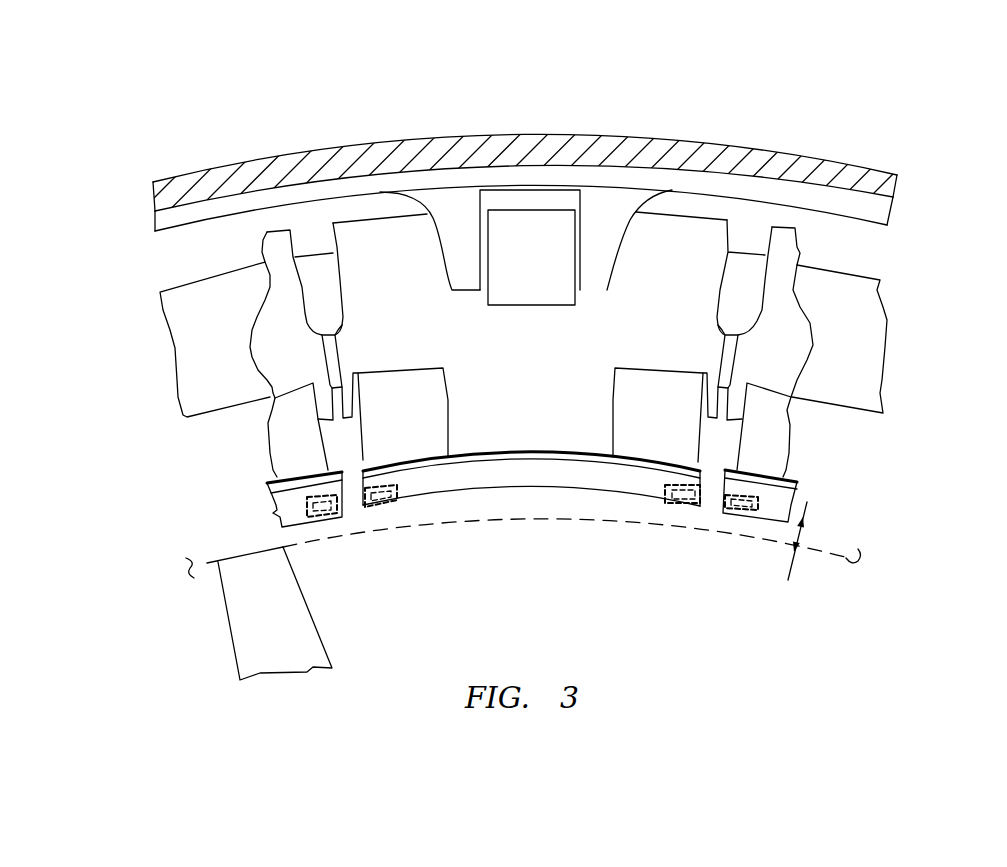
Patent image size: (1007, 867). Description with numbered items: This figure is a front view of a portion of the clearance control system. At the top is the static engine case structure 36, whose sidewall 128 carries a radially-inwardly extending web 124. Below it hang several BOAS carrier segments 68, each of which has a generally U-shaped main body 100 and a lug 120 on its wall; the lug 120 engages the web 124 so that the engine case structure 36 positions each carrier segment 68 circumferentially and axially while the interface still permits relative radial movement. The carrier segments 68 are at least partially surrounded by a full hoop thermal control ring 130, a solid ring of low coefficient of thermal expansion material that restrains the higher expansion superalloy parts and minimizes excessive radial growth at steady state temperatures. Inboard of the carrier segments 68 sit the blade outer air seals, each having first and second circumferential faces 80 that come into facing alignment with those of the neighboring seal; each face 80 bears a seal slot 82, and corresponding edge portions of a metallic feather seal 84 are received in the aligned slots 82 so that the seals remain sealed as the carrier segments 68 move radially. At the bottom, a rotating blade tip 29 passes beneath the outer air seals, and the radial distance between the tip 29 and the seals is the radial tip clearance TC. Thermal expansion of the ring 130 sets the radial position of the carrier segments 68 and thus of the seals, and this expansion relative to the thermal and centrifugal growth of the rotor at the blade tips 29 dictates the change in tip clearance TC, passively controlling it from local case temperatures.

The engine case structure 36 is at (522, 149).
The sidewall 128 is at (530, 134).
The web 124 is at (448, 186).
The main body 100 is at (690, 245).
The lug 120 is at (537, 228).
The BOAS carrier segment 68 is at (296, 366).
The full hoop thermal control ring 130 is at (856, 310).
The circumferential face 80 is at (380, 517).
The seal slot 82 is at (406, 508).
The seal 84 is at (300, 512).
The radial tip clearance TC is at (807, 541).
The blade tip 29 is at (243, 557).